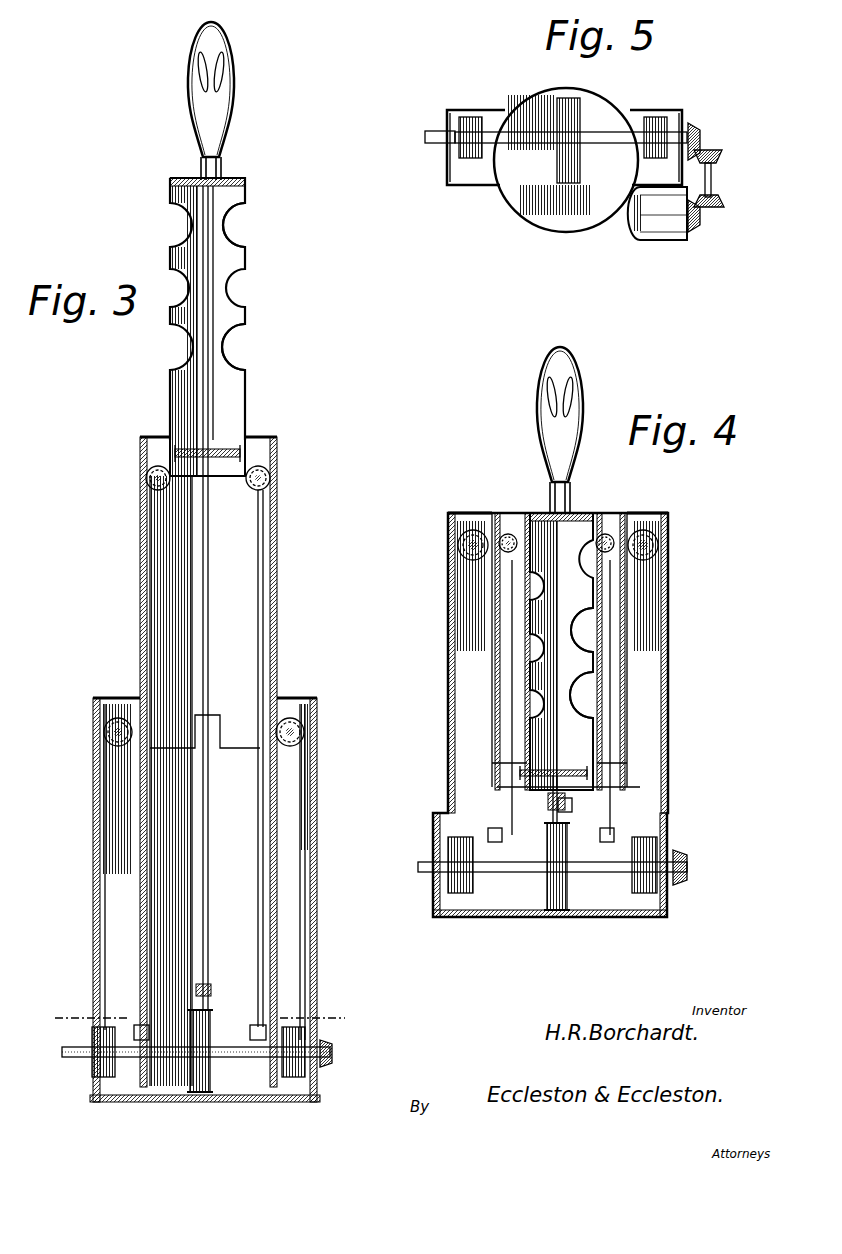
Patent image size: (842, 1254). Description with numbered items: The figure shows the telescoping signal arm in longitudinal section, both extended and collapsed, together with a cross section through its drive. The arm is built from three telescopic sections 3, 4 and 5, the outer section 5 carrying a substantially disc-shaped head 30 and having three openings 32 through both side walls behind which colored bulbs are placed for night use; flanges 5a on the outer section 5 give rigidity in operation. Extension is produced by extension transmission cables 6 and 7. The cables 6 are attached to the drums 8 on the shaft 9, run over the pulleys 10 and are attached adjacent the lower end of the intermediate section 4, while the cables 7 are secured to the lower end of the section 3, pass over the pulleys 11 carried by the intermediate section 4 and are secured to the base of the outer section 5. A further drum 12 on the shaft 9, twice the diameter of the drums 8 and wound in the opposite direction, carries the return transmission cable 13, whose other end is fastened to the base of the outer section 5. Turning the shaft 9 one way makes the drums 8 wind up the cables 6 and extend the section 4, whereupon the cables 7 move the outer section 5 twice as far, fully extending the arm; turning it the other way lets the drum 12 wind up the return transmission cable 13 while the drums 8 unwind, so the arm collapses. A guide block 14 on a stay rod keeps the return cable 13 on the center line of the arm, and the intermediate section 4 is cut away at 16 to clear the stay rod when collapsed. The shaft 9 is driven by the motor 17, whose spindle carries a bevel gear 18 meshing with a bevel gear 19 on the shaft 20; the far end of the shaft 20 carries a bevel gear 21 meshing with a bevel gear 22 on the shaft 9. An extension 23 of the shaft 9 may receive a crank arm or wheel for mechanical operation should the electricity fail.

In FIG. 3, the telescopic section 3 is at (312, 852).
In FIG. 4, the telescopic section 3 is at (550, 715).
In FIG. 5, the telescopic section 3 is at (564, 160).
In FIG. 3, the intermediate section 4 is at (277, 592).
In FIG. 3, the outer section 5 is at (246, 262).
In FIG. 4, the outer section 5 is at (595, 598).
In FIG. 3, the flanges 5a is at (150, 455).
In FIG. 3, the extension transmission cables 6 is at (104, 886).
In FIG. 4, the extension transmission cables 6 is at (557, 650).
In FIG. 3, the extension transmission cables 7 is at (150, 610).
In FIG. 4, the extension transmission cables 7 is at (564, 677).
In FIG. 3, the drums 8 is at (118, 1078).
In FIG. 4, the drums 8 is at (448, 884).
In FIG. 5, the drums 8 is at (563, 137).
In FIG. 3, the shaft 9 is at (242, 1060).
In FIG. 4, the shaft 9 is at (598, 872).
In FIG. 5, the shaft 9 is at (520, 136).
In FIG. 3, the pulleys 10 is at (104, 740).
In FIG. 4, the pulleys 10 is at (558, 545).
In FIG. 3, the pulleys 11 is at (272, 478).
In FIG. 4, the pulleys 11 is at (556, 543).
In FIG. 3, the drum 12 is at (192, 1092).
In FIG. 4, the drum 12 is at (567, 900).
In FIG. 5, the drum 12 is at (568, 140).
In FIG. 3, the return transmission cable 13 is at (206, 892).
In FIG. 4, the return transmission cable 13 is at (560, 770).
In FIG. 3, the guide block 14 is at (209, 988).
In FIG. 4, the guide block 14 is at (572, 806).
In FIG. 3, the cut-away 16 is at (230, 708).
In FIG. 4, the cut-away 16 is at (565, 798).
In FIG. 5, the motor 17 is at (655, 242).
In FIG. 5, the bevel gear 18 is at (702, 228).
In FIG. 5, the bevel gear 19 is at (726, 203).
In FIG. 5, the shaft 20 is at (712, 190).
In FIG. 5, the bevel gear 21 is at (724, 158).
In FIG. 5, the bevel gear 22 is at (702, 130).
In FIG. 5, the extension 23 is at (430, 131).
In FIG. 3, the disc-shaped head 30 is at (235, 128).
In FIG. 4, the disc-shaped head 30 is at (583, 455).
In FIG. 3, the openings 32 is at (232, 290).
In FIG. 4, the openings 32 is at (582, 684).